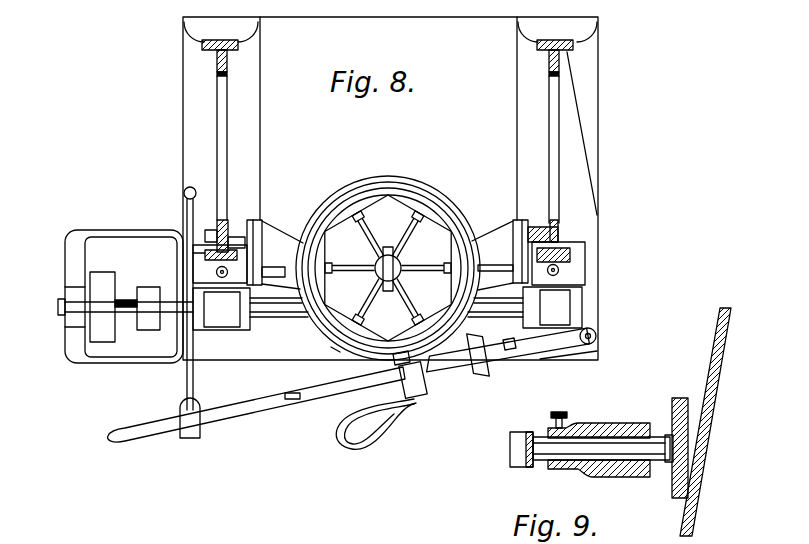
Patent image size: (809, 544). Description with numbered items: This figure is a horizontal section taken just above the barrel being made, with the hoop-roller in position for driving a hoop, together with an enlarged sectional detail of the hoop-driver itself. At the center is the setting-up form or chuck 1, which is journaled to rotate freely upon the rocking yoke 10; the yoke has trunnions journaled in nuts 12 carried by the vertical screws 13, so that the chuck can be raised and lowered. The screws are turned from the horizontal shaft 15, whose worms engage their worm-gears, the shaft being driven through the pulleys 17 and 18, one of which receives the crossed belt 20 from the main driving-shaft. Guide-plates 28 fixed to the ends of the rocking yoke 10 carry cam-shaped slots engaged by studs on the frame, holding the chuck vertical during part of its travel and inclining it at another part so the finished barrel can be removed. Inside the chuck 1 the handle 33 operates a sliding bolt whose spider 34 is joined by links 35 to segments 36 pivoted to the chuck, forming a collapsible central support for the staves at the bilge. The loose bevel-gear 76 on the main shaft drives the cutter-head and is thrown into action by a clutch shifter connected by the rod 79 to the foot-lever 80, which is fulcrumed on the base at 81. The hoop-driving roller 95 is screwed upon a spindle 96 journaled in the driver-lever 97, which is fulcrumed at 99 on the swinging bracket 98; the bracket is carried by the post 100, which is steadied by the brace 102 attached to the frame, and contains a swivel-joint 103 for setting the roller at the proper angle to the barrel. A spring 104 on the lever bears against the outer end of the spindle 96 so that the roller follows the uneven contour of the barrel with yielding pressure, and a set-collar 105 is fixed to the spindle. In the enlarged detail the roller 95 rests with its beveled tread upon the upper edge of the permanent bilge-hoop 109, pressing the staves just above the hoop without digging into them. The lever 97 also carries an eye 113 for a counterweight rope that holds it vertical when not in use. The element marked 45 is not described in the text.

In FIG. 8, the setting-up form or chuck 1 is at (420, 187).
In FIG. 8, the rocking yoke 10 is at (390, 188).
In FIG. 8, the nuts 12 is at (389, 263).
In FIG. 8, the vertical screws 13 is at (388, 272).
In FIG. 8, the horizontal shaft 15 is at (58, 306).
In FIG. 8, the driving-pulley 17 is at (102, 307).
In FIG. 8, the driving-pulley 18 is at (148, 308).
In FIG. 8, the belt 20 is at (381, 240).
In FIG. 8, the guide-plates 28 is at (250, 218).
In FIG. 8, the handle 33 is at (388, 252).
In FIG. 8, the spider 34 is at (398, 262).
In FIG. 8, the links 35 is at (410, 309).
In FIG. 8, the segments 36 is at (400, 324).
In FIG. 8, the plate 45 is at (205, 253).
In FIG. 9, the loose bevel-gear 76 is at (601, 448).
In FIG. 8, the rod 79 is at (200, 186).
In FIG. 8, the foot-lever 80 is at (184, 410).
In FIG. 8, the fulcrum 81 is at (387, 308).
In FIG. 8, the hoop-driving roller 95 is at (378, 370).
In FIG. 9, the hoop-driving roller 95 is at (682, 438).
In FIG. 9, the spindle 96 is at (662, 458).
In FIG. 8, the driver-lever 97 is at (256, 404).
In FIG. 9, the driver-lever 97 is at (599, 441).
In FIG. 8, the swinging bracket 98 is at (508, 350).
In FIG. 8, the fulcrum 99 is at (428, 380).
In FIG. 8, the post 100 is at (597, 337).
In FIG. 8, the brace 102 is at (582, 133).
In FIG. 8, the swivel-joint 103 is at (481, 380).
In FIG. 8, the spring 104 is at (376, 424).
In FIG. 9, the spring 104 is at (507, 449).
In FIG. 9, the set-collar 105 is at (560, 412).
In FIG. 8, the permanent bilge-hoop 109 is at (331, 347).
In FIG. 9, the permanent bilge-hoop 109 is at (682, 523).
In FIG. 8, the eye 113 is at (296, 411).